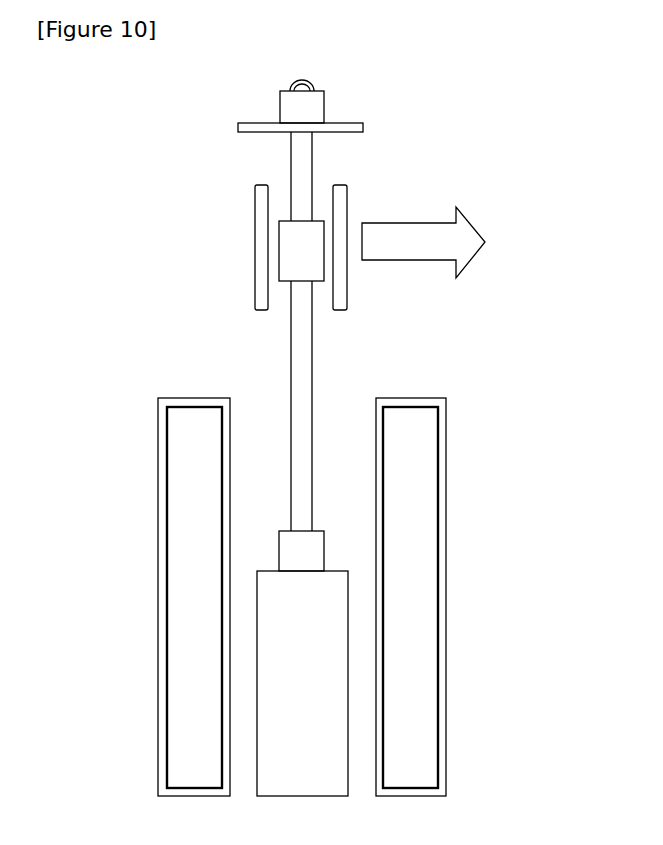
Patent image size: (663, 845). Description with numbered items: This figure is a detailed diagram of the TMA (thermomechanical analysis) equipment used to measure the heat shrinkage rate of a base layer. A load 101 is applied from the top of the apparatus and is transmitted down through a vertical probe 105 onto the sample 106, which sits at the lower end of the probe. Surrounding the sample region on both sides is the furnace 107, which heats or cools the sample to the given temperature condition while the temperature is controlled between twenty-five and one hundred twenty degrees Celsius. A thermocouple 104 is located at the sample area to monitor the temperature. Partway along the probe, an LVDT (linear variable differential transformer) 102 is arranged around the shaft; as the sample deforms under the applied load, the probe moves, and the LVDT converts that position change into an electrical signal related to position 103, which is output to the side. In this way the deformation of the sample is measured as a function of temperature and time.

The load 101 is at (340, 73).
The LVDT (linear variable differential transformer) 102 is at (234, 238).
The signal related to position 103 is at (445, 242).
The thermocouple 104 is at (266, 571).
The probe 105 is at (312, 478).
The sample 106 is at (325, 548).
The furnace 107 is at (446, 612).